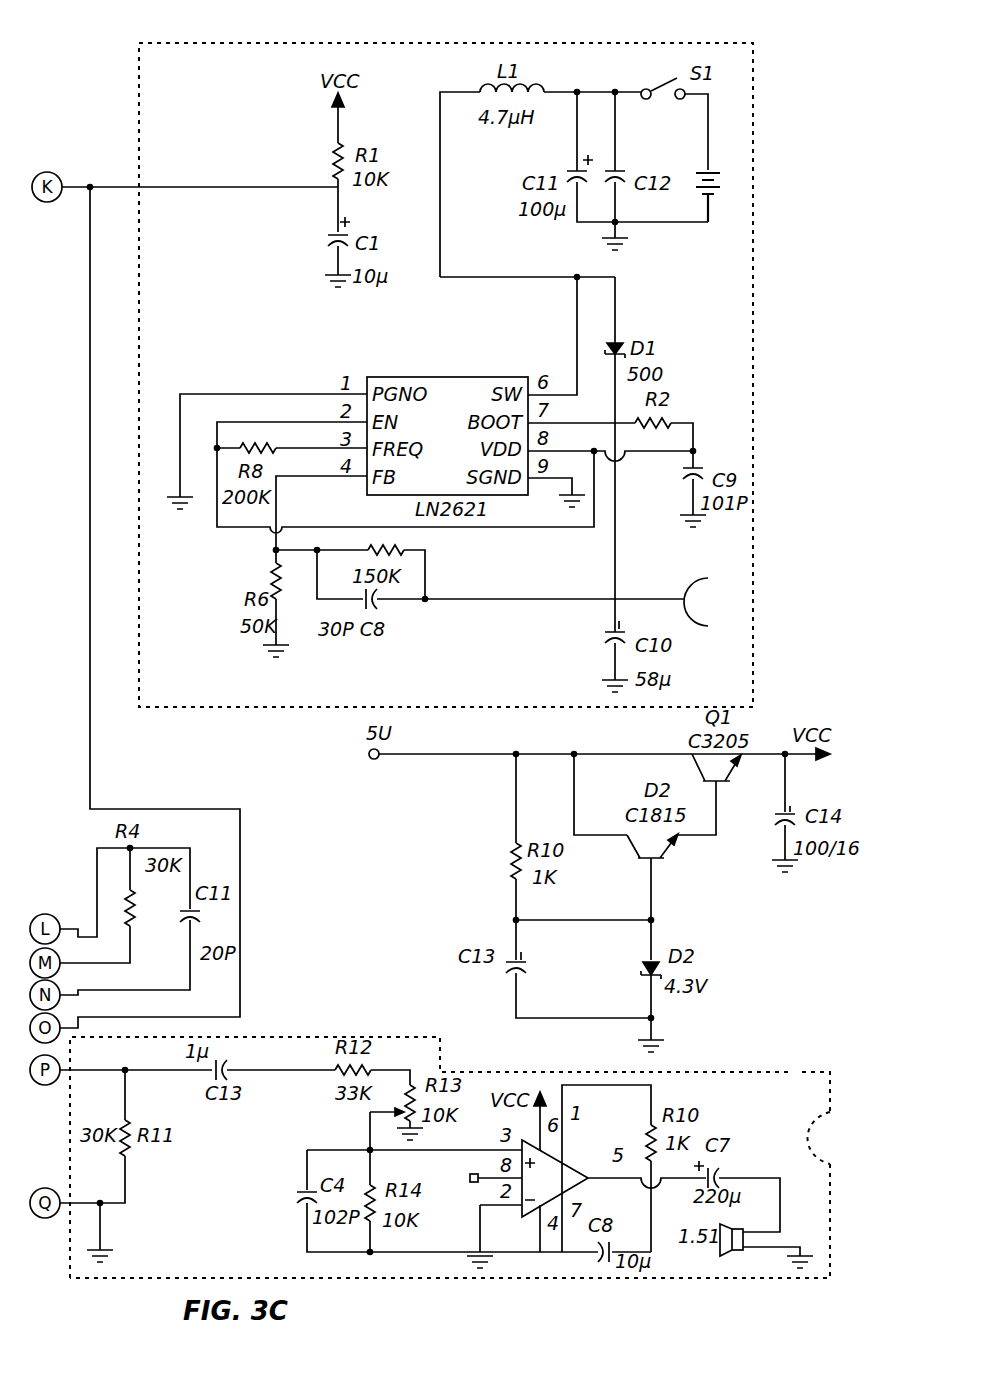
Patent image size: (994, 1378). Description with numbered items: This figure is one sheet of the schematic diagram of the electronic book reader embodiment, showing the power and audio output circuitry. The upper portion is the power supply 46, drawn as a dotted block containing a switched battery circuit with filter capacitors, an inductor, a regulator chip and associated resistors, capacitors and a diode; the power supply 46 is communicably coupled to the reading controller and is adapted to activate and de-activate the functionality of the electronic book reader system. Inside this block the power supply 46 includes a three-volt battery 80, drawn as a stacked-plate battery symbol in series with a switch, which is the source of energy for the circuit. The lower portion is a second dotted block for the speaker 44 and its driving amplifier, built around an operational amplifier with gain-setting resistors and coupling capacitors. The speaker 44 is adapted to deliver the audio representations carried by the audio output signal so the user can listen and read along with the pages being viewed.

The power supply 46 is at (619, 45).
The 3V battery 80 is at (700, 180).
The speaker 44 is at (790, 1072).